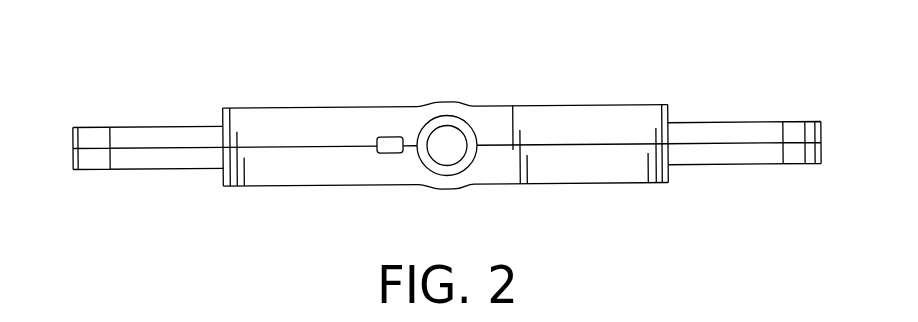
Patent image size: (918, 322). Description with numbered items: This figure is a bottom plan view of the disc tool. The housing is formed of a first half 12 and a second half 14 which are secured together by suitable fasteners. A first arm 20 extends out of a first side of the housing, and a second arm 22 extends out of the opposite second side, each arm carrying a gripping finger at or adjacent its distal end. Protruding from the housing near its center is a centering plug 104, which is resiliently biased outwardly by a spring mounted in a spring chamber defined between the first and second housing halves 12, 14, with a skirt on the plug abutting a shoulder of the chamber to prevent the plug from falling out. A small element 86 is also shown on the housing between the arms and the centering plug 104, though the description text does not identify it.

The first half 12 is at (598, 118).
The second half 14 is at (598, 170).
The first arm 20 is at (737, 148).
The second arm 22 is at (160, 153).
The set screw 86 is at (389, 136).
The centering plug 104 is at (447, 147).